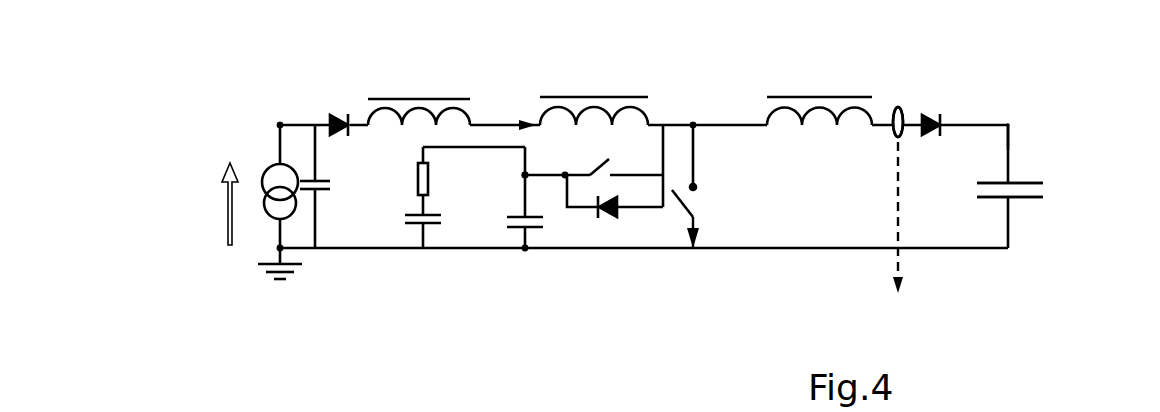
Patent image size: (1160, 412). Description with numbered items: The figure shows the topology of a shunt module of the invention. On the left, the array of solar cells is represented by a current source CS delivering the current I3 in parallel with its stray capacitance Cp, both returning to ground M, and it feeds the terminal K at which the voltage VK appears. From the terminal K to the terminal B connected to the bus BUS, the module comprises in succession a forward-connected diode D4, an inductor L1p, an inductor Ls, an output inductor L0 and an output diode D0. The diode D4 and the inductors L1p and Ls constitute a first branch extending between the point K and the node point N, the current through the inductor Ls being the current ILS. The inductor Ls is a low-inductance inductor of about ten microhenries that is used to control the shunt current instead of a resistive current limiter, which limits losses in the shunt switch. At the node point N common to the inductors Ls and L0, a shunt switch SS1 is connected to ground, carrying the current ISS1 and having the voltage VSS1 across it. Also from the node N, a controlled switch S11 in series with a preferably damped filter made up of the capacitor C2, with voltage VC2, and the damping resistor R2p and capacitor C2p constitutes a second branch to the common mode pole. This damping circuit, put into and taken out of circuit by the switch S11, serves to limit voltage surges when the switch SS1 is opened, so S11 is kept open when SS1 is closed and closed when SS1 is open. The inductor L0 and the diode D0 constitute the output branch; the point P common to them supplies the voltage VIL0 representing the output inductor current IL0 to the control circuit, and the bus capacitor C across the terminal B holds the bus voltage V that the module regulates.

The terminal K is at (269, 112).
The voltage at terminal K VK is at (280, 126).
The forward-connected diode D4 is at (332, 105).
The inductor L1p is at (419, 94).
The current through inductor Ls ILS is at (517, 112).
The inductor Ls is at (594, 94).
The node point N is at (693, 110).
The voltage across shunt switch SS1 VSS1 is at (696, 125).
The output inductor L0 is at (819, 94).
The voltage V(ILo) VIL0 is at (893, 110).
The point P is at (886, 135).
The output diode D0 is at (936, 109).
The terminal B is at (1007, 111).
The bus BUS is at (1012, 138).
The bus capacitor C is at (1010, 208).
The bus voltage V is at (1010, 178).
The output inductor current IL0 is at (919, 228).
The stray capacitance Cp is at (330, 186).
The current source CS is at (268, 211).
The solar array current I3 is at (217, 207).
The ground M is at (290, 285).
The damping resistor R2p is at (438, 180).
The damping capacitor C2p is at (407, 233).
The filter capacitor C2 is at (504, 234).
The voltage across capacitor C2 VC2 is at (546, 165).
The controlled switch S11 is at (622, 185).
The shunt switch SS1 is at (707, 191).
The shunt switch current ISS1 is at (712, 235).